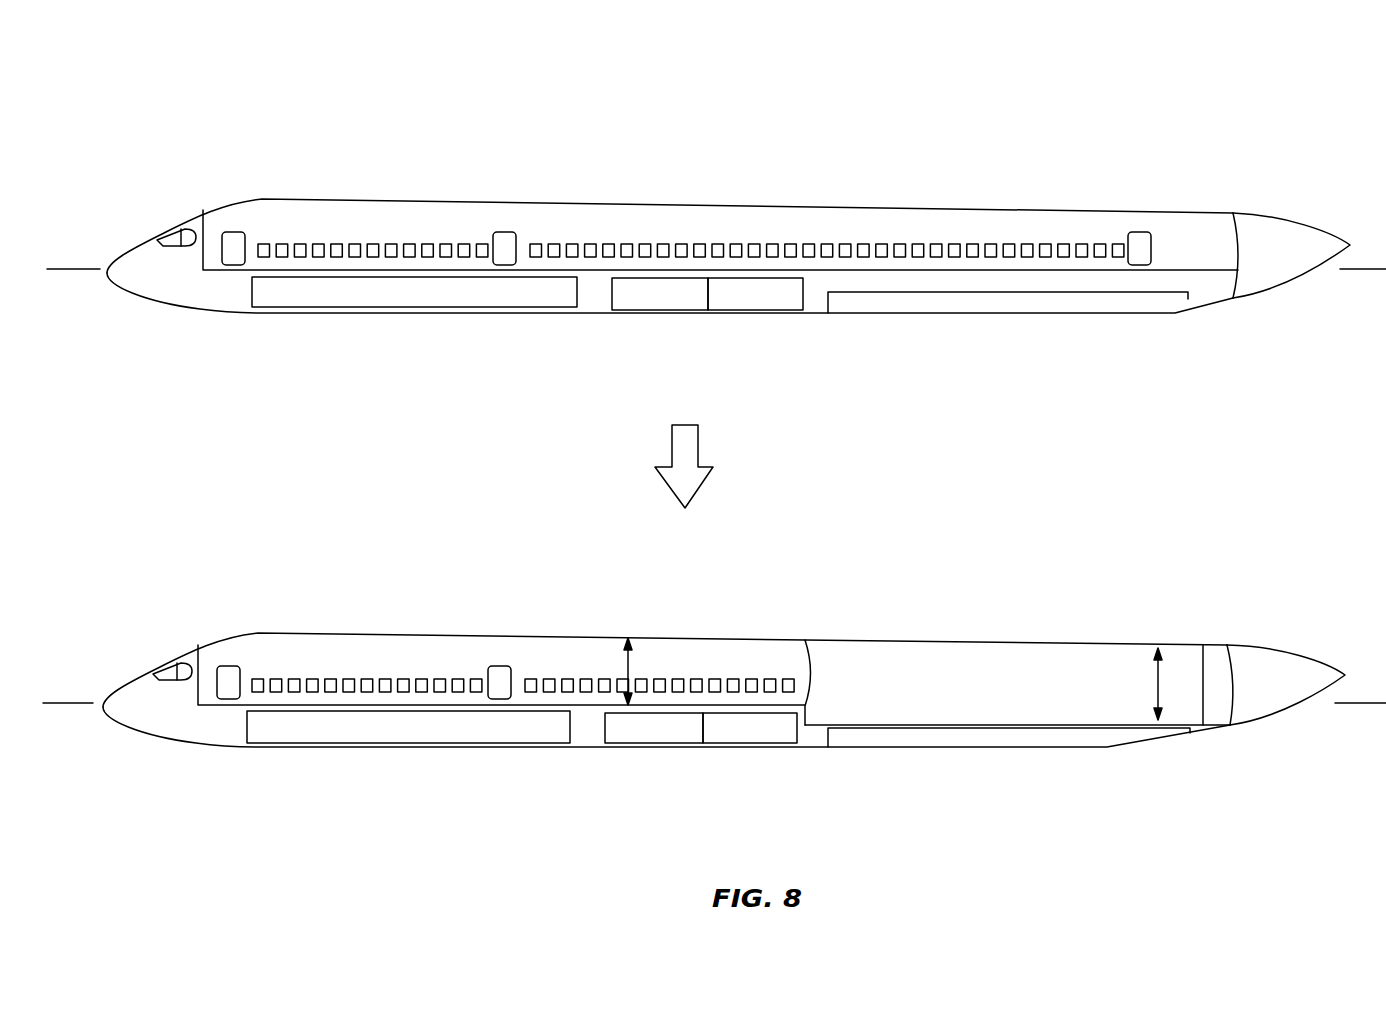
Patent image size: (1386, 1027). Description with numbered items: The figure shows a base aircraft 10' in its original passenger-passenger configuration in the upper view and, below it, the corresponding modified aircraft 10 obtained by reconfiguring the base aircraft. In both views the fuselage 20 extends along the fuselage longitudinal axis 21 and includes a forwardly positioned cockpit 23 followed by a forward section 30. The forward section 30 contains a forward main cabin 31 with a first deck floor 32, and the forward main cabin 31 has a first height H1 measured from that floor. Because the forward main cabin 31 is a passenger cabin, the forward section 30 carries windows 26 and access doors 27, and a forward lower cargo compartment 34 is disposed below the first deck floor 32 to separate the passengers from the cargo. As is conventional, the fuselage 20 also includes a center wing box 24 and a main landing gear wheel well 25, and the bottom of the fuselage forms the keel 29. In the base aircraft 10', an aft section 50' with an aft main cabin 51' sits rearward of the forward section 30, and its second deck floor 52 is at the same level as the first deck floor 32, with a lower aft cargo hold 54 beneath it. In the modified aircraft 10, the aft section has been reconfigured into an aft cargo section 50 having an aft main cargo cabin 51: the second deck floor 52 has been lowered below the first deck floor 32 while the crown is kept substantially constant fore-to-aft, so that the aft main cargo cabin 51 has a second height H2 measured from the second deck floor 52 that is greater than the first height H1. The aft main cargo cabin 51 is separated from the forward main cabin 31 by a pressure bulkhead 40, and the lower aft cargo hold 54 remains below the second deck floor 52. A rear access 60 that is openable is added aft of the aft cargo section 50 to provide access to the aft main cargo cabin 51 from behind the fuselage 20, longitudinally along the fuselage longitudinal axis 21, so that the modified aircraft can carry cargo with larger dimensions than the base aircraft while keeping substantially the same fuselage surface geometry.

The aircraft 10 is at (724, 612).
The base aircraft 10' is at (728, 182).
The fuselage 20 is at (662, 163).
The fuselage longitudinal axis 21 is at (85, 265).
The cockpit 23 is at (152, 240).
The center wing box 24 is at (657, 297).
The main landing gear wheel well 25 is at (760, 297).
The windows 26 is at (315, 245).
The access doors 27 is at (235, 245).
The keel 29 is at (530, 313).
The forward section 30 is at (575, 220).
The forward main cabin 31 is at (462, 208).
The first deck floor 32 is at (380, 272).
The forward lower cargo compartment 34 is at (306, 302).
The pressure bulkhead 40 is at (815, 660).
The aft cargo section 50 is at (1063, 651).
The aft section 50' is at (933, 194).
The aft main cargo cabin 51 is at (1095, 630).
The aft main cabin 51' is at (1022, 187).
The second deck floor 52 is at (847, 270).
The lower aft cargo hold 54 is at (930, 305).
The rear access 60 is at (1248, 178).
The first height H1 is at (648, 671).
The second height H2 is at (1175, 684).